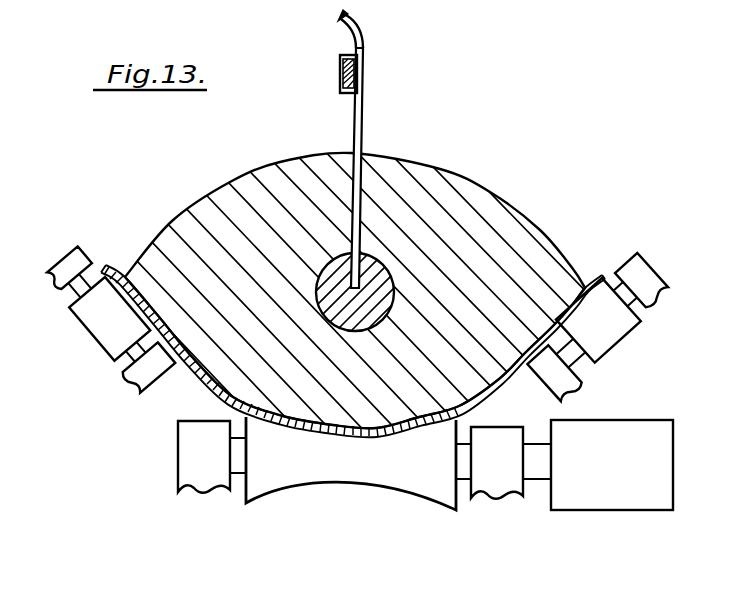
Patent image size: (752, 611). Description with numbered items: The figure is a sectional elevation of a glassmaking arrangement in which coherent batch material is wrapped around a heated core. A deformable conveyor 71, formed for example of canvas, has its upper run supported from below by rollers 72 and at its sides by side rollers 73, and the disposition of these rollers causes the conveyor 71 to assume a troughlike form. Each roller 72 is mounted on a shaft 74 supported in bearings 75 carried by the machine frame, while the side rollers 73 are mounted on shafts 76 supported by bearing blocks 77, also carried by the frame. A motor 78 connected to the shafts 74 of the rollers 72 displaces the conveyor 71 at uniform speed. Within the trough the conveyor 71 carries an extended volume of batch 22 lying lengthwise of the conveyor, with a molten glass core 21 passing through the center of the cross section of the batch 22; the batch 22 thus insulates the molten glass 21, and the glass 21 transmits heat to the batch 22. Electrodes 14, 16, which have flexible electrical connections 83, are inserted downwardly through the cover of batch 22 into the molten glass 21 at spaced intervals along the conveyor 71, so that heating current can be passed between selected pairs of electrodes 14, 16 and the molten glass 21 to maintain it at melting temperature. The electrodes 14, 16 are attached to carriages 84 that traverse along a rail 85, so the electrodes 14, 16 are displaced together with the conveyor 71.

The electrode 14 is at (392, 168).
The electrode 16 is at (362, 112).
The molten glass core 21 is at (368, 270).
The batch 22 is at (444, 267).
The deformable conveyor 71 is at (121, 278).
The roller 72 is at (357, 481).
The side roller 73 is at (98, 318).
The shaft 74 is at (240, 465).
The bearing 75 is at (201, 478).
The shaft 76 is at (77, 293).
The bearing block 77 is at (68, 259).
The motor 78 is at (612, 465).
The flexible electrical connection 83 is at (356, 30).
The carriage 84 is at (348, 55).
The rail 85 is at (340, 66).